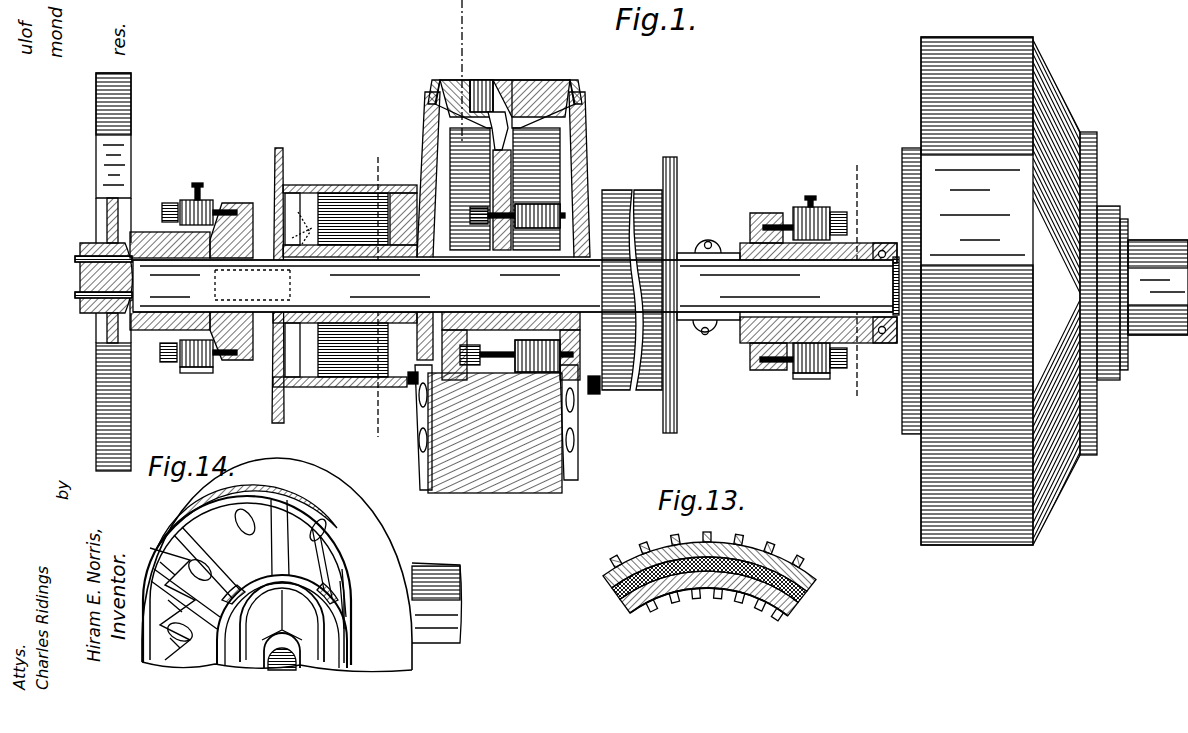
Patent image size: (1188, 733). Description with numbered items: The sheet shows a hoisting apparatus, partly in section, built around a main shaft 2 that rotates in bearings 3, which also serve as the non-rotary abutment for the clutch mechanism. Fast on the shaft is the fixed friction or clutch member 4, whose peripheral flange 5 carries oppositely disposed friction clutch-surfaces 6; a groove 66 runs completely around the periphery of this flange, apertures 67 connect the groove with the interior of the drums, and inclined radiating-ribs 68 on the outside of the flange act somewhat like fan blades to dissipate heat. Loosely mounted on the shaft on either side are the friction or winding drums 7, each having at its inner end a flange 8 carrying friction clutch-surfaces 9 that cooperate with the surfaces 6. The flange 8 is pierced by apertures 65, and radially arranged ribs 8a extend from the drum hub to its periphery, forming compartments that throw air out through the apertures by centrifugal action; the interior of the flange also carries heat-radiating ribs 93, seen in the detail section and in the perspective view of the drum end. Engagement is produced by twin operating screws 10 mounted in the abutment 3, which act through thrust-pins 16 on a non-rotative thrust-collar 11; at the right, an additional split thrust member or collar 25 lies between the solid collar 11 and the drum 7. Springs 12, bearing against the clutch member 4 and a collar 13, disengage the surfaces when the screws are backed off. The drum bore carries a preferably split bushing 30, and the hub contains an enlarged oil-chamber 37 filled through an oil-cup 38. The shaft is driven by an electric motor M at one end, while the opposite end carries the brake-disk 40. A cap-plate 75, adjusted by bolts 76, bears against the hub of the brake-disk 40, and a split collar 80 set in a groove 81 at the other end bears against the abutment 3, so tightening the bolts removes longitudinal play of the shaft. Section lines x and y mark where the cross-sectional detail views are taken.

In FIG. 1, the main shaft 2 is at (273, 335).
In FIG. 1, the bearings 3 is at (163, 331).
In FIG. 1, the fixed friction or clutch member 4 is at (562, 210).
In FIG. 1, the peripheral flange 5 is at (462, 85).
In FIG. 1, the friction clutch-surfaces 6 is at (442, 85).
In FIG. 13, the friction clutch-surfaces 6 is at (612, 584).
In FIG. 1, the friction or winding drums 7 is at (622, 200).
In FIG. 14, the friction or winding drums 7 is at (457, 581).
In FIG. 1, the flanges 8 is at (424, 150).
In FIG. 14, the flanges 8 is at (370, 523).
In FIG. 1, the radially-arranged flanges or ribs 8a is at (437, 130).
In FIG. 14, the radially-arranged flanges or ribs 8a is at (290, 547).
In FIG. 1, the friction clutch-surfaces 9 is at (431, 103).
In FIG. 14, the friction clutch-surfaces 9 is at (377, 640).
In FIG. 13, the friction clutch-surfaces 9 is at (624, 592).
In FIG. 1, the twin operating screws 10 is at (176, 203).
In FIG. 1, the thrust-collar 11 is at (233, 203).
In FIG. 1, the springs 12 is at (584, 395).
In FIG. 1, the collar 13 is at (415, 380).
In FIG. 1, the thrust-pins 16 is at (214, 200).
In FIG. 1, the thrust member or collar 25 is at (690, 252).
In FIG. 1, the bushing 30 is at (392, 325).
In FIG. 1, the oil-chamber 37 is at (360, 323).
In FIG. 1, the oil-cup 38 is at (322, 242).
In FIG. 1, the brake-disk 40 is at (131, 104).
In FIG. 1, the apertures 65 is at (510, 190).
In FIG. 14, the apertures 65 is at (253, 522).
In FIG. 1, the groove 66 is at (513, 86).
In FIG. 1, the apertures 67 is at (492, 80).
In FIG. 1, the radiating-ribs 68 is at (483, 493).
In FIG. 13, the radiating-ribs 68 is at (650, 560).
In FIG. 1, the cap-plate 75 is at (80, 278).
In FIG. 1, the bolts 76 is at (78, 258).
In FIG. 1, the split collar 80 is at (884, 344).
In FIG. 1, the groove 81 is at (886, 245).
In FIG. 14, the heat-radiating ribs 93 is at (195, 575).
In FIG. 13, the heat-radiating ribs 93 is at (680, 595).
In FIG. 1, the electric motor M is at (1036, 76).
In FIG. 1, the section line x x is at (370, 295).
In FIG. 1, the section line y y is at (850, 281).